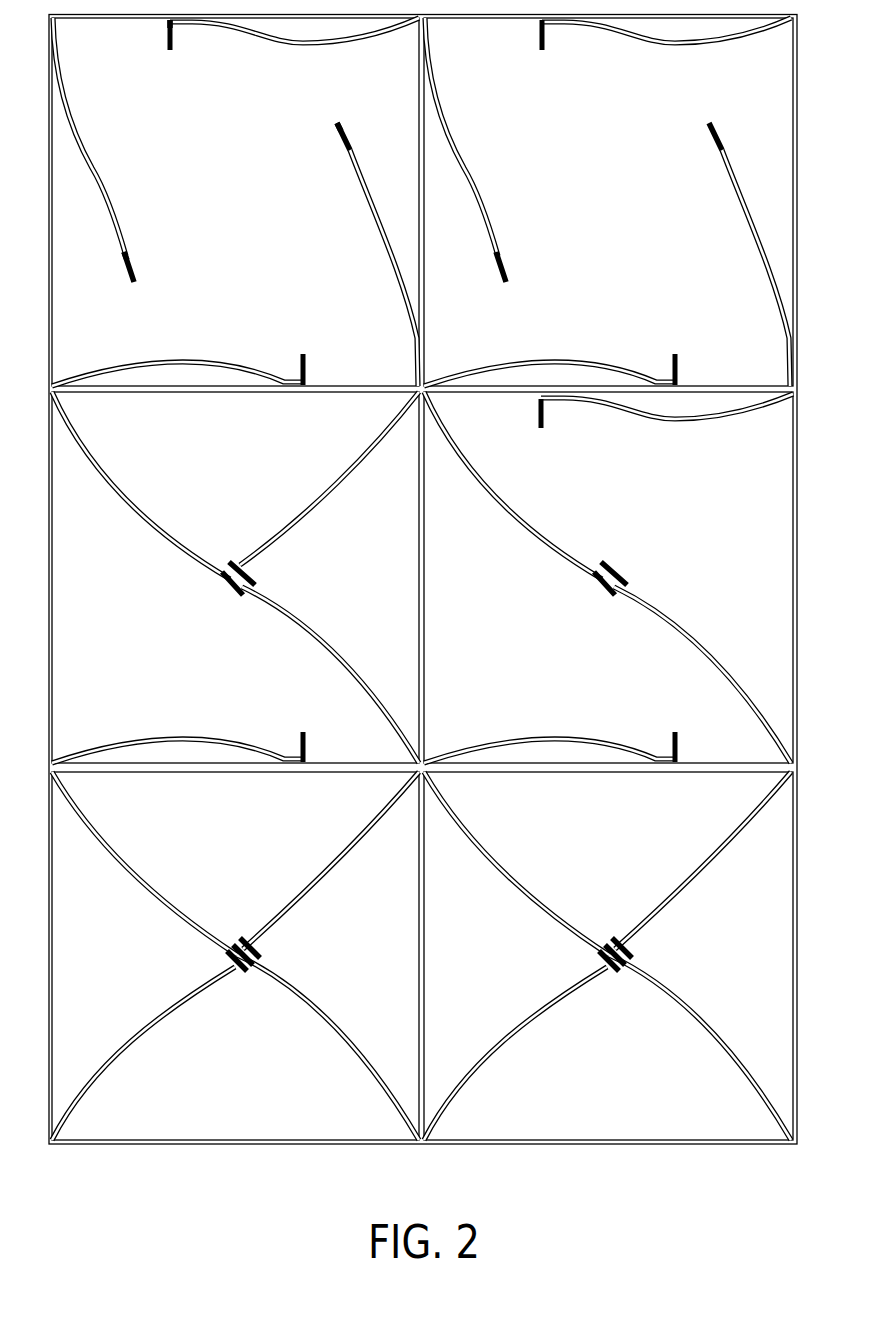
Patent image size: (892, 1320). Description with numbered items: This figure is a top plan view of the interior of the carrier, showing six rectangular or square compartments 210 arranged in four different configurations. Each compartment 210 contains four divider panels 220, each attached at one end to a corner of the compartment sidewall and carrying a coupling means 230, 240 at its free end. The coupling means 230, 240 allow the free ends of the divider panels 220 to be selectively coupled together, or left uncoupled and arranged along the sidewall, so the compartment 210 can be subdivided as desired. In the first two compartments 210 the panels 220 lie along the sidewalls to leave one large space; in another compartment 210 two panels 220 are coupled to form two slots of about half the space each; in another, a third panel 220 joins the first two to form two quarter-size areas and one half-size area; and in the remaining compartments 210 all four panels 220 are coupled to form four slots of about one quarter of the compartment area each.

The compartment 210 is at (250, 220).
The divider panel 220 is at (262, 41).
The coupling means 230 is at (350, 133).
The coupling means 240 is at (166, 40).